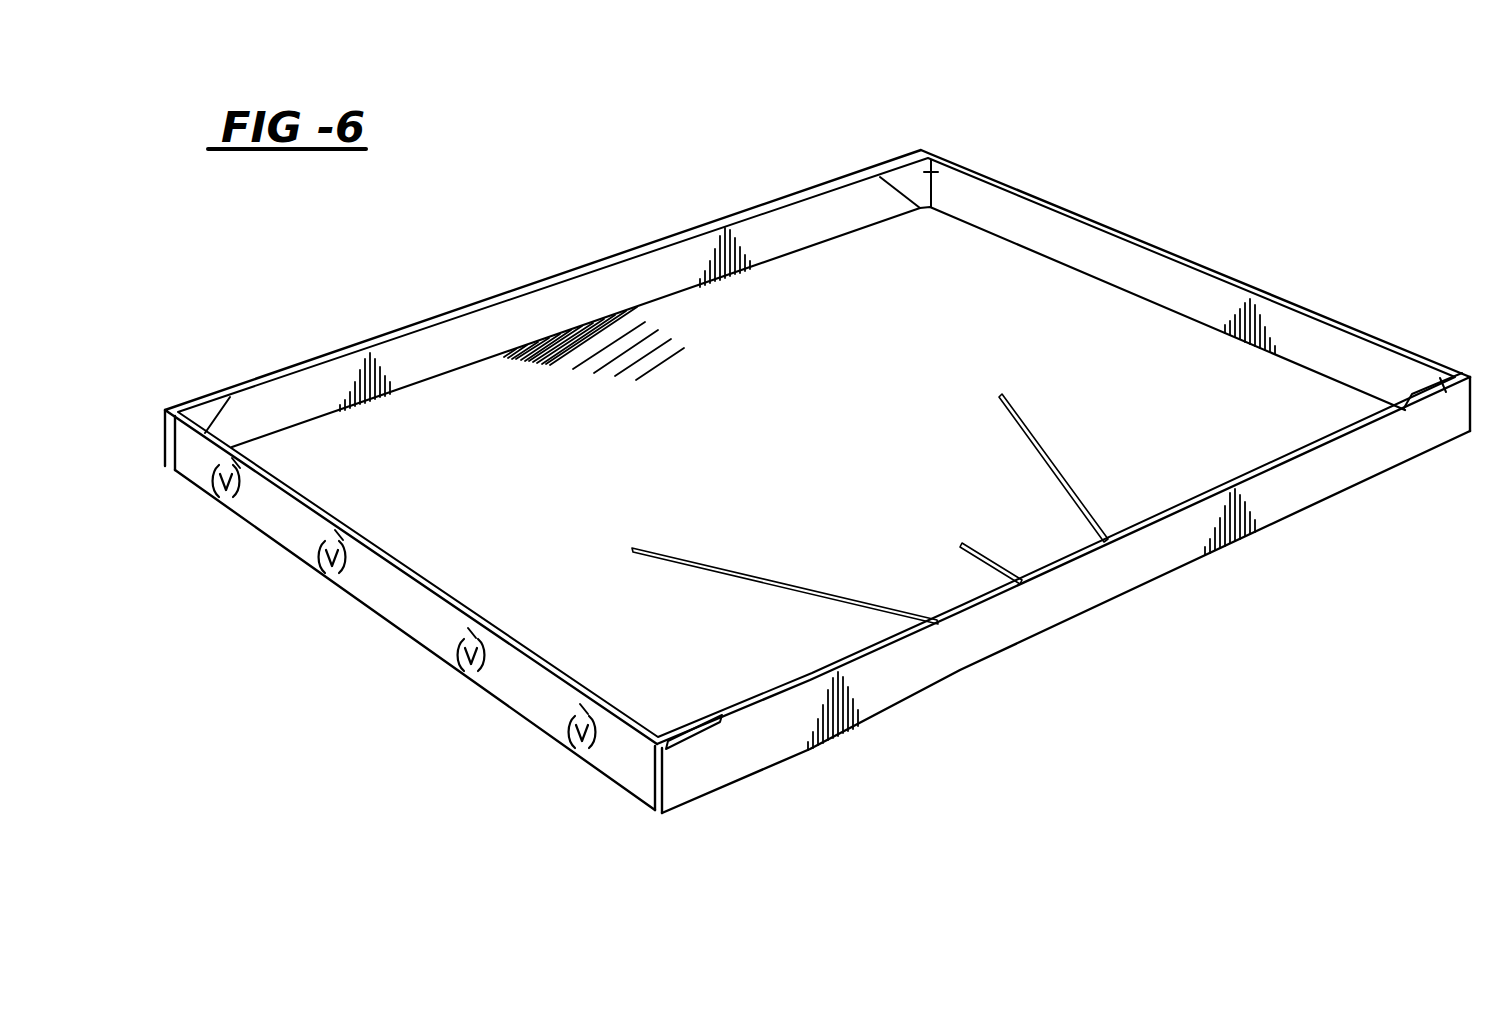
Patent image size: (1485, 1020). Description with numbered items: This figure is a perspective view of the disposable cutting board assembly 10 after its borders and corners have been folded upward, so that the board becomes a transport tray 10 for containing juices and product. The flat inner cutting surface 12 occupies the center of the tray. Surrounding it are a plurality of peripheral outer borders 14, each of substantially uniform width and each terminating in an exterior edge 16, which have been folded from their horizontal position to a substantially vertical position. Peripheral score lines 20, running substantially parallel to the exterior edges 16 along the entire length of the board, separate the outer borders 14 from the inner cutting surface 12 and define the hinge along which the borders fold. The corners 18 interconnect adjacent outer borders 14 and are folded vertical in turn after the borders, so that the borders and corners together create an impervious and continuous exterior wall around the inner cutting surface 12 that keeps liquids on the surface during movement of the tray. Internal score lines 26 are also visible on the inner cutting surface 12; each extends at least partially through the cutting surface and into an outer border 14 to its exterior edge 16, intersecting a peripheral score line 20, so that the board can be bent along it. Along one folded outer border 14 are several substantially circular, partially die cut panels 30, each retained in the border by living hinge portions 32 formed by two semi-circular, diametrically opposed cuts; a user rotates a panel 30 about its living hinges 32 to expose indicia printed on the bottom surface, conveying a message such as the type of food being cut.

The cutting board assembly 10 is at (1278, 604).
The inner cutting surface 12 is at (805, 449).
The peripheral outer border 14 is at (668, 245).
The exterior edge 16 is at (395, 333).
The corner 18 is at (940, 170).
The peripheral score line 20 is at (474, 360).
The internal score line 26 is at (795, 590).
The die cut panel 30 is at (205, 487).
The living hinge portion 32 is at (238, 463).